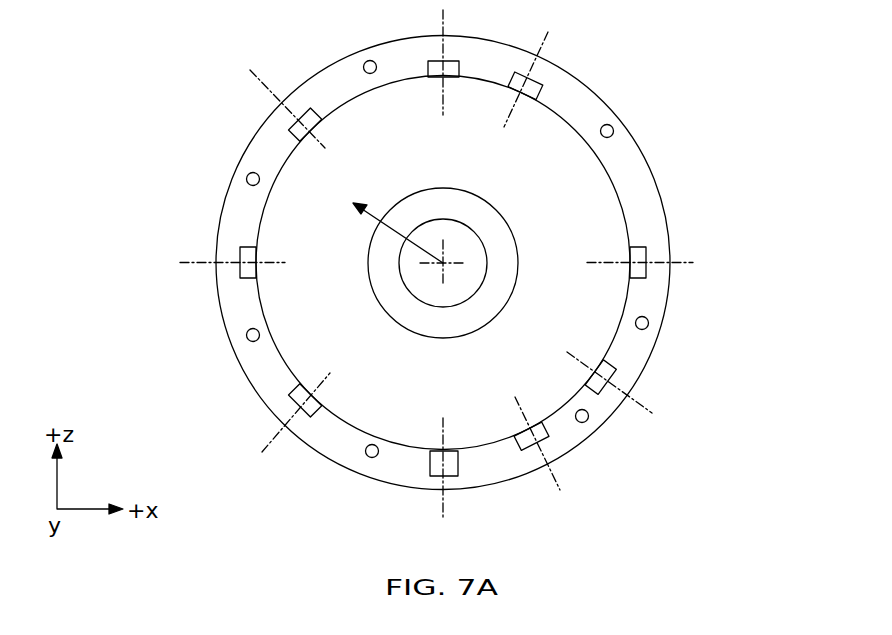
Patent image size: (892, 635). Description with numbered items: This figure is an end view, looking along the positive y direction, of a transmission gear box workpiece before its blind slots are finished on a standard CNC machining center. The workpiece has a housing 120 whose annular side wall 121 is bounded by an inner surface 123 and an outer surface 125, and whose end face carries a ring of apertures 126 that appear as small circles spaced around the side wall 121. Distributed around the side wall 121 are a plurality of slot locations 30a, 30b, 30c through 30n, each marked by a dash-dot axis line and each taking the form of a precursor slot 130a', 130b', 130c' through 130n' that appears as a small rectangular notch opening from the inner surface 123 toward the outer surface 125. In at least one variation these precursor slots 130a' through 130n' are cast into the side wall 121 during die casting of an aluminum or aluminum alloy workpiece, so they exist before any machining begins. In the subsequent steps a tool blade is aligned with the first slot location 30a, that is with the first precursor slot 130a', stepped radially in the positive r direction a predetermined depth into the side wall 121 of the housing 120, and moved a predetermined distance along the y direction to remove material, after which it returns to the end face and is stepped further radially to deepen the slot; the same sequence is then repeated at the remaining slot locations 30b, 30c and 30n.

The housing 120 is at (662, 105).
The side wall 121 is at (637, 173).
The inner surface 123 is at (628, 236).
The outer surface 125 is at (668, 223).
The apertures 126 is at (648, 324).
The first slot location 30a is at (274, 422).
The second slot location 30b is at (212, 261).
The third slot location 30c is at (267, 101).
The nth slot location 30n is at (445, 485).
The first precursor slot 130a' is at (233, 404).
The second precursor slot 130b' is at (200, 241).
The third precursor slot 130c' is at (251, 114).
The nth precursor slot 130n' is at (494, 488).